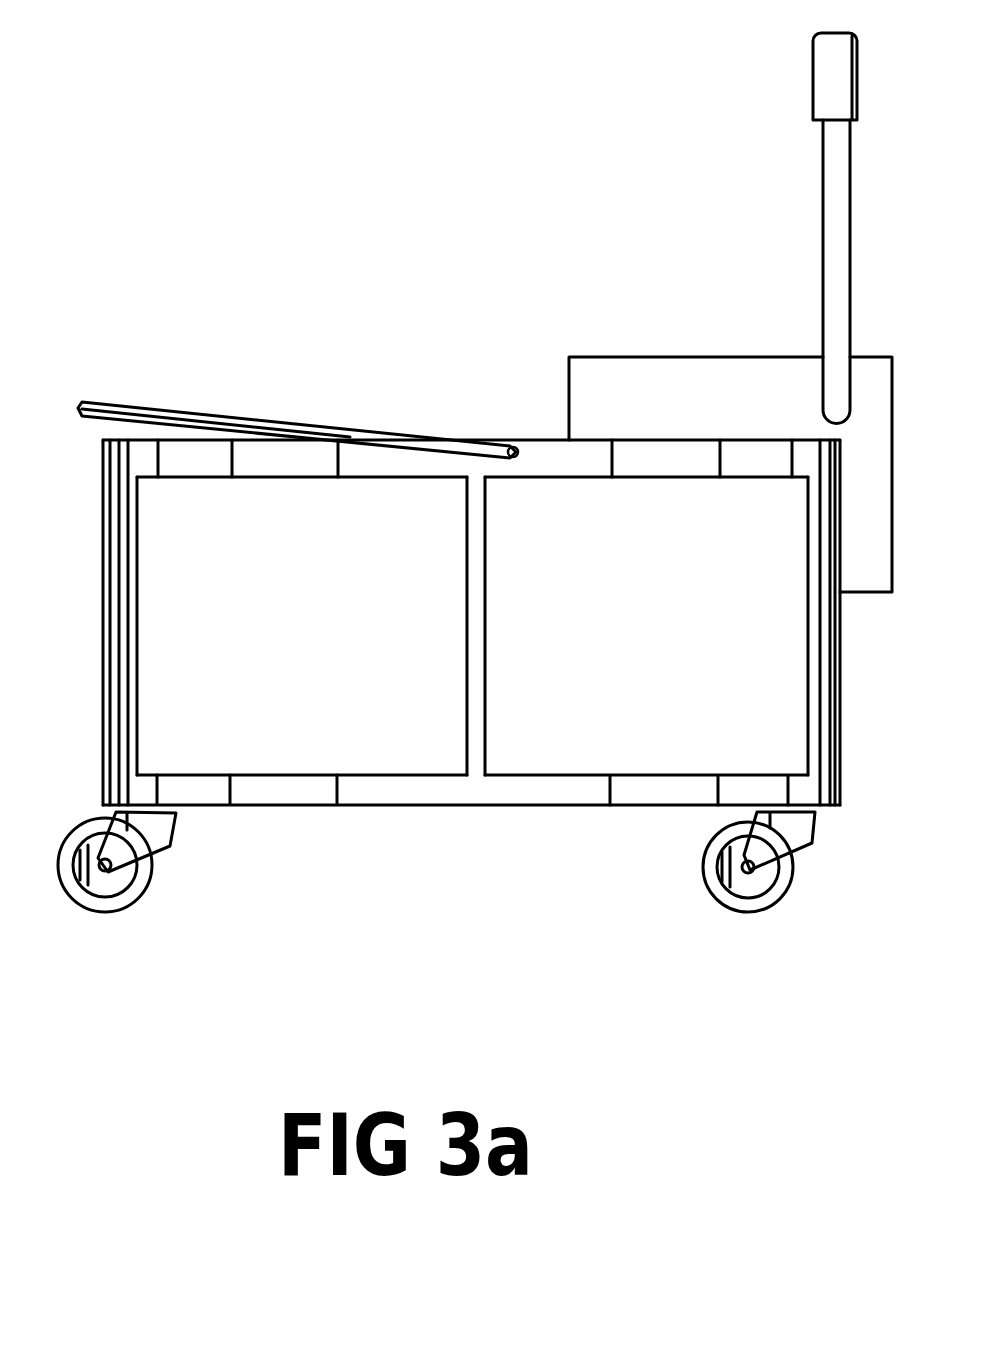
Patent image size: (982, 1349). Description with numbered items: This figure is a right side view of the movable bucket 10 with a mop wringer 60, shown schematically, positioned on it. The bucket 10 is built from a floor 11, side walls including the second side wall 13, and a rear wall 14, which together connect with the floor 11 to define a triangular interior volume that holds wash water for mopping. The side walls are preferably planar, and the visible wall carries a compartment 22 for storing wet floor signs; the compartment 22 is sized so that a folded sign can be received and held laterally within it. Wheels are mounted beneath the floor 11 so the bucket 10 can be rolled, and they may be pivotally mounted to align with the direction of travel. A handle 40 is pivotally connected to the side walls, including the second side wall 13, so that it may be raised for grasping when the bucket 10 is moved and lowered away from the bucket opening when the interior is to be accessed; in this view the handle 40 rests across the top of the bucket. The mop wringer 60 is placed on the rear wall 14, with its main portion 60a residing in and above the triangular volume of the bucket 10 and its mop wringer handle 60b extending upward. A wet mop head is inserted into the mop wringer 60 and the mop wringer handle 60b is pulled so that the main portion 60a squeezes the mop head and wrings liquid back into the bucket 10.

The movable bucket 10 is at (511, 703).
The floor 11 is at (288, 808).
The second side wall 13 is at (530, 790).
The rear wall 14 is at (842, 665).
The compartment 22 is at (310, 686).
The handle 40 is at (160, 403).
The mop wringer 60 is at (643, 297).
The main portion of the mop wringer 60a is at (650, 437).
The mop wringer handle 60b is at (813, 104).